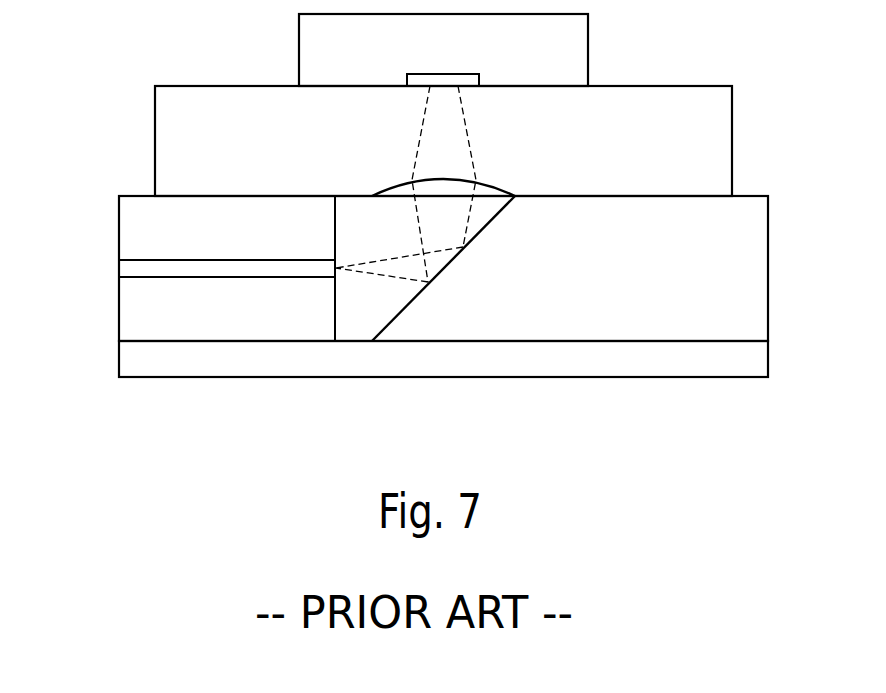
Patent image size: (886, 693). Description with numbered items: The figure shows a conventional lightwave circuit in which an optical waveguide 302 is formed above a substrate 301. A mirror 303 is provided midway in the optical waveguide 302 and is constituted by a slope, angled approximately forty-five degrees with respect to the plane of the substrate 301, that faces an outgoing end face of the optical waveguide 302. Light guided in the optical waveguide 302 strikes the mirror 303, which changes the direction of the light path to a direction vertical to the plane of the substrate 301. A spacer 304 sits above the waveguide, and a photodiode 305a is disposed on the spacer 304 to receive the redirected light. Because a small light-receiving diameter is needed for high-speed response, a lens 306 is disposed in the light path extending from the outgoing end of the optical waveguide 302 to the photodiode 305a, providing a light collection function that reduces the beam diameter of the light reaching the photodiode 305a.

The substrate 301 is at (770, 356).
The optical waveguide 302 is at (106, 278).
The mirror 303 is at (430, 280).
The spacer 304 is at (155, 143).
The photodiode 305a is at (479, 78).
The lens 306 is at (515, 192).